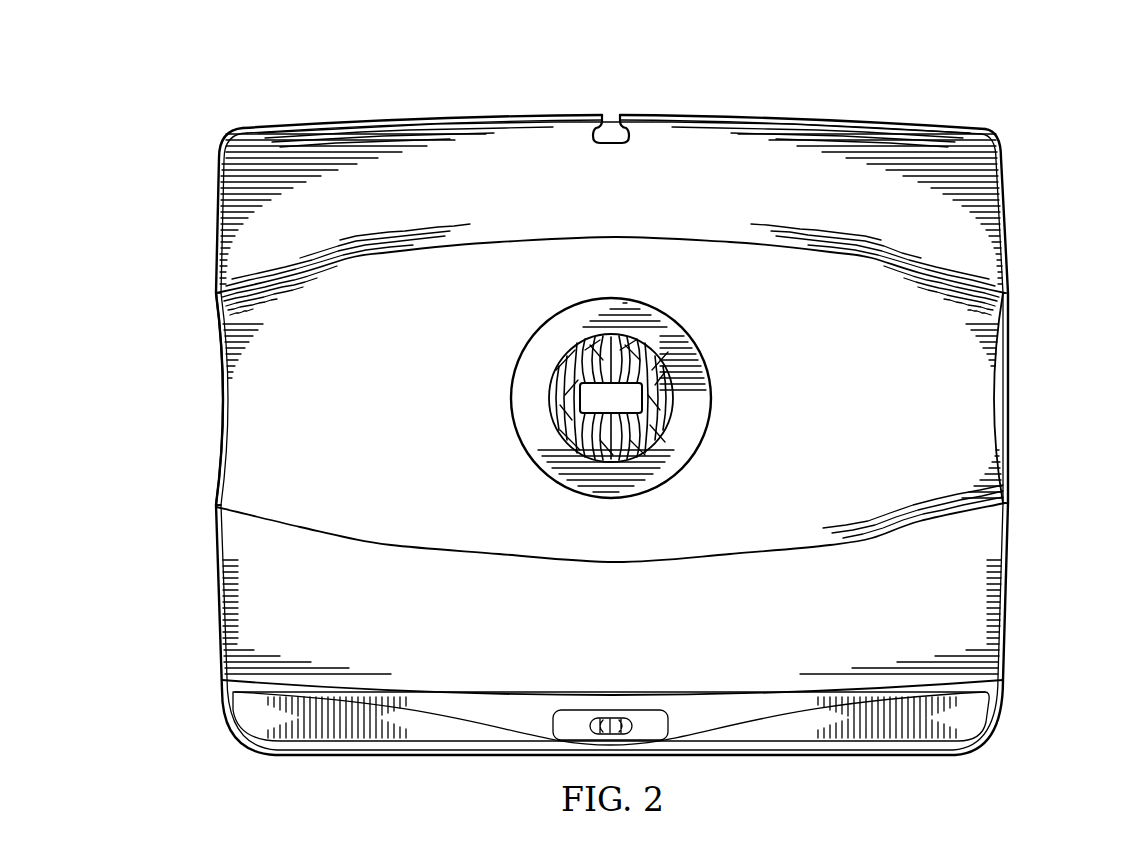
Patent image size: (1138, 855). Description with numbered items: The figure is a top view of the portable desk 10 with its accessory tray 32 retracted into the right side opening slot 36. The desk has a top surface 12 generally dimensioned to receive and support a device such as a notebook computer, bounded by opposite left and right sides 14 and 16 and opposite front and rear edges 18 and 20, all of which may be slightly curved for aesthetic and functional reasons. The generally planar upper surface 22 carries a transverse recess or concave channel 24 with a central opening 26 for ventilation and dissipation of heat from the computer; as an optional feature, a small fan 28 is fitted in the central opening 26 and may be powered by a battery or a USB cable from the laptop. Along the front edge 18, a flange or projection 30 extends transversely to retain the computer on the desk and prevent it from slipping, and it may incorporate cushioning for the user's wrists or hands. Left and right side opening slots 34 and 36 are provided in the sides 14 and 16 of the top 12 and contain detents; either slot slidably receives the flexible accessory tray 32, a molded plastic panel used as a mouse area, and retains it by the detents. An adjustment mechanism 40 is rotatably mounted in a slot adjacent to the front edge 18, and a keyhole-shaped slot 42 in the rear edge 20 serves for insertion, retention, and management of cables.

The portable desk 10 is at (320, 82).
The top surface 12 is at (707, 135).
The left side 14 is at (216, 606).
The right side 16 is at (1003, 605).
The front edge 18 is at (378, 758).
The rear edge 20 is at (808, 122).
The upper surface 22 is at (886, 630).
The concave channel 24 is at (215, 340).
The central opening 26 is at (672, 410).
The fan 28 is at (560, 392).
The flange 30 is at (445, 745).
The accessory tray 32 is at (1000, 418).
The left side opening slot 34 is at (215, 527).
The right side opening slot 36 is at (1005, 527).
The adjustment mechanism 40 is at (618, 710).
The keyhole-shaped slot 42 is at (612, 121).